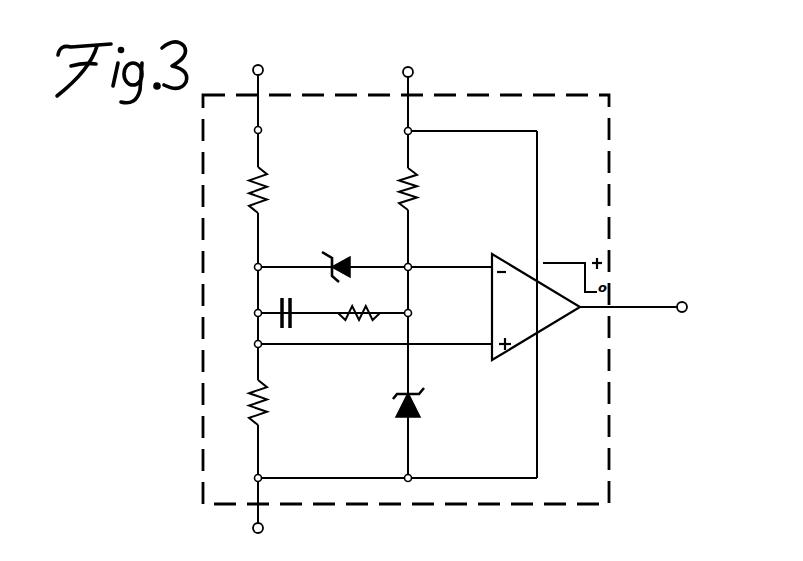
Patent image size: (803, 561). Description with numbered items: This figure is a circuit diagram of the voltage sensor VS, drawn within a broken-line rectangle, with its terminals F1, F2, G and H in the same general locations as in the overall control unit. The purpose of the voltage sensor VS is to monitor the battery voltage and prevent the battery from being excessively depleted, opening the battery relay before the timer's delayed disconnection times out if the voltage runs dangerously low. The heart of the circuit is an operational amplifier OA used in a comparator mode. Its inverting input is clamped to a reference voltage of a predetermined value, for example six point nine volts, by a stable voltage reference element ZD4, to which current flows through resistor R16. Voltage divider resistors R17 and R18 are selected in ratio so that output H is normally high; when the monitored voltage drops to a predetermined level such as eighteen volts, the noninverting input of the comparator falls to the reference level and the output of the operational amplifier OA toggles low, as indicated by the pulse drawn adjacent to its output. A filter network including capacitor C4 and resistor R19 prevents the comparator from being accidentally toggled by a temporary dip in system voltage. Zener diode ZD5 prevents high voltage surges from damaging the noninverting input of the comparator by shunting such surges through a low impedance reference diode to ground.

The terminal F1 is at (264, 69).
The terminal F2 is at (414, 72).
The terminal G is at (264, 528).
The output terminal H is at (683, 281).
The voltage sensor VS is at (200, 204).
The resistor R16 is at (419, 190).
The voltage divider resistor R17 is at (269, 190).
The voltage divider resistor R18 is at (269, 403).
The resistor R19 is at (356, 300).
The capacitor C4 is at (294, 280).
The stable voltage reference element ZD4 is at (421, 400).
The Zener diode ZD5 is at (349, 239).
The operational amplifier OA is at (512, 262).